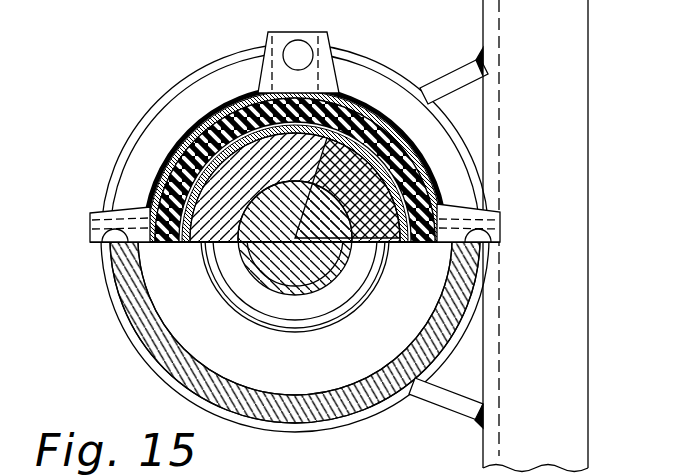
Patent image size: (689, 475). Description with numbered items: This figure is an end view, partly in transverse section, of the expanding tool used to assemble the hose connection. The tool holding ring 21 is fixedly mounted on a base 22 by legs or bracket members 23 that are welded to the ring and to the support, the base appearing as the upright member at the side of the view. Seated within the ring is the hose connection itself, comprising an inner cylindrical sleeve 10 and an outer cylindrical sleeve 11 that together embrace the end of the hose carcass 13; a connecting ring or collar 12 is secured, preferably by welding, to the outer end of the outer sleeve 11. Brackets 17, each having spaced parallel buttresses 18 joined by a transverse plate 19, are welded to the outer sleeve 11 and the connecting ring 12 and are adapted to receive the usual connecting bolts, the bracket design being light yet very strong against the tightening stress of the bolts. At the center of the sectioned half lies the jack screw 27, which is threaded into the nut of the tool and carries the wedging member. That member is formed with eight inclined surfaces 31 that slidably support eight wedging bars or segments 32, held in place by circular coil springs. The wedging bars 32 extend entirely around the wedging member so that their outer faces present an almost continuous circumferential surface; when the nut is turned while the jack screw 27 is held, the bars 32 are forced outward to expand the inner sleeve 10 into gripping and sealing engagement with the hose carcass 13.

The inner cylindrical sleeve 10 is at (200, 247).
The outer cylindrical sleeve 11 is at (162, 247).
The connecting ring or collar 12 is at (181, 145).
The hose carcass 13 is at (221, 100).
The bracket 17 is at (311, 44).
The buttresses 18 is at (266, 44).
The transverse plate 19 is at (364, 42).
The tool holding ring 21 is at (365, 80).
The base 22 is at (578, 80).
The legs or bracket members 23 is at (459, 78).
The jack screw 27 is at (258, 262).
The inclined surfaces 31 is at (434, 176).
The wedging bars or segments 32 is at (396, 132).